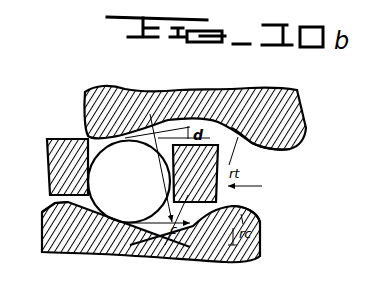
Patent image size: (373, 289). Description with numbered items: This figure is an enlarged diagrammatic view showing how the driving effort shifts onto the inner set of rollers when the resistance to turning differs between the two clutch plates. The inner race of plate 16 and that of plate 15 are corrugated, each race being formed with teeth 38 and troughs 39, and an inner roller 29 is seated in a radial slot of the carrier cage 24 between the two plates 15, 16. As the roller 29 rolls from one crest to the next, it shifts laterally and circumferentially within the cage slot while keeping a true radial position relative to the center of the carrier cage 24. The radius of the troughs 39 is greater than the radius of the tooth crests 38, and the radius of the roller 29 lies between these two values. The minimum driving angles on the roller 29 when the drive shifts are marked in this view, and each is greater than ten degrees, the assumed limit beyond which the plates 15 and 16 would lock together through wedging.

The plate 15 is at (80, 243).
The plate 16 is at (288, 128).
The carrier cage 24 is at (50, 160).
The inner rollers 29 is at (142, 191).
The teeth 38 is at (42, 211).
The troughs 39 is at (242, 138).